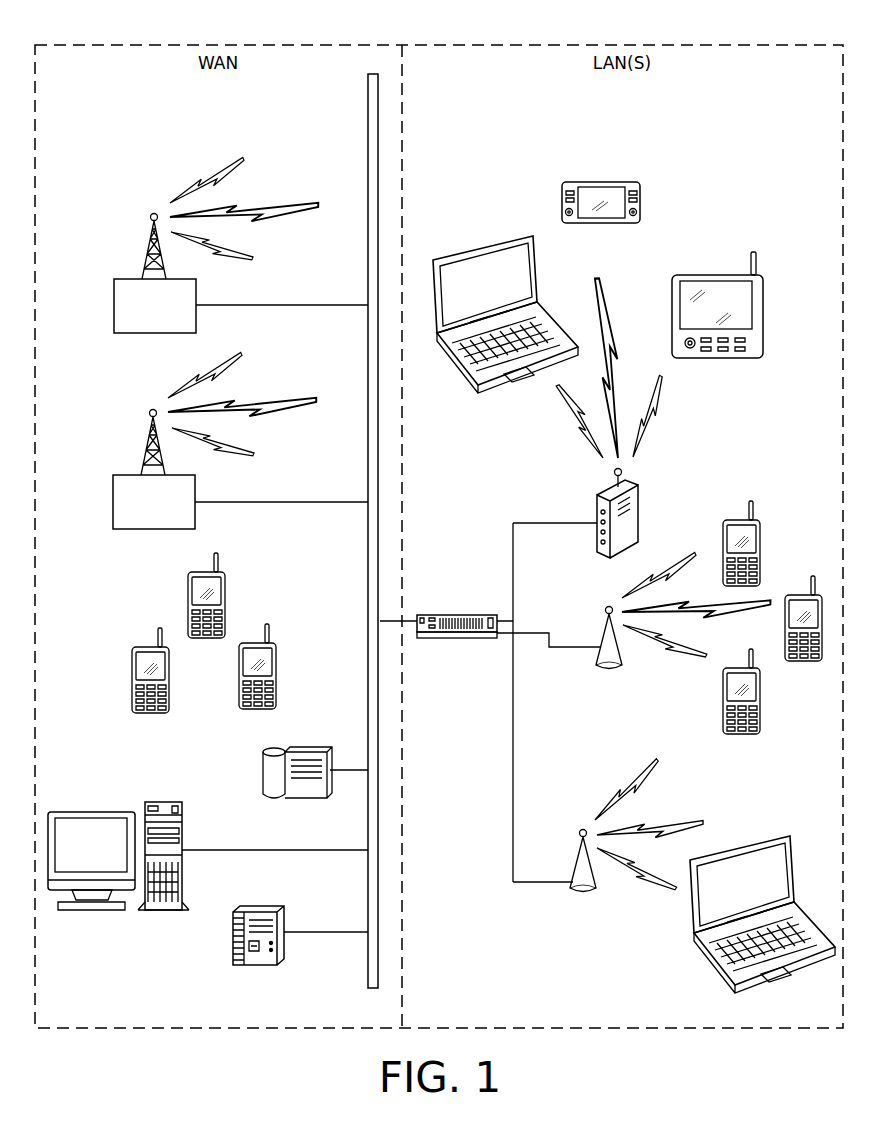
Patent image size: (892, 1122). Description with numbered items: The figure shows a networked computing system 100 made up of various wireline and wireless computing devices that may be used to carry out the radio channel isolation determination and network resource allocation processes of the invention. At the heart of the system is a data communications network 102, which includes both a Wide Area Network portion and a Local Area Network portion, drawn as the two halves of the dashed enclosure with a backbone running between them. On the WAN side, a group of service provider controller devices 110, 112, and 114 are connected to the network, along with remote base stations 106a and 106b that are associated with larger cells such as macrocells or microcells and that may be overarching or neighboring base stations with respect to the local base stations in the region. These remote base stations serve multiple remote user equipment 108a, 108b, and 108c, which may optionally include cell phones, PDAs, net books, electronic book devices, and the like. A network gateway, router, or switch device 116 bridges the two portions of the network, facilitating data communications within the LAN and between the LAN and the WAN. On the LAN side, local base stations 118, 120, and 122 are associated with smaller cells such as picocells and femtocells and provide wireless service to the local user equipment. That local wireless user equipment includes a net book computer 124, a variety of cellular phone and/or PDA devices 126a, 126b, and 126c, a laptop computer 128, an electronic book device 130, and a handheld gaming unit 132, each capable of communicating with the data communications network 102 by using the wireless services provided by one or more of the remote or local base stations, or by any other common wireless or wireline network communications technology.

The networked computing system 100 is at (159, 37).
The data communications network 102 is at (366, 93).
The remote base station 106a is at (124, 278).
The remote base station 106b is at (123, 474).
The remote user equipment 108a is at (131, 671).
The remote user equipment 108b is at (187, 596).
The remote user equipment 108c is at (278, 665).
The service provider controller device 110 is at (262, 769).
The service provider controller device 112 is at (163, 801).
The service provider controller device 114 is at (283, 918).
The network gateway, router, or switch device 116 is at (447, 613).
The local base station 118 is at (573, 867).
The local base station 120 is at (603, 630).
The local base station 122 is at (640, 498).
The net book computer 124 is at (772, 837).
The cellular phone and/or PDA device 126a is at (722, 720).
The cellular phone and/or PDA device 126b is at (810, 669).
The cellular phone and/or PDA device 126c is at (763, 544).
The laptop computer 128 is at (470, 252).
The electronic book device 130 is at (708, 275).
The handheld gaming unit 132 is at (585, 182).